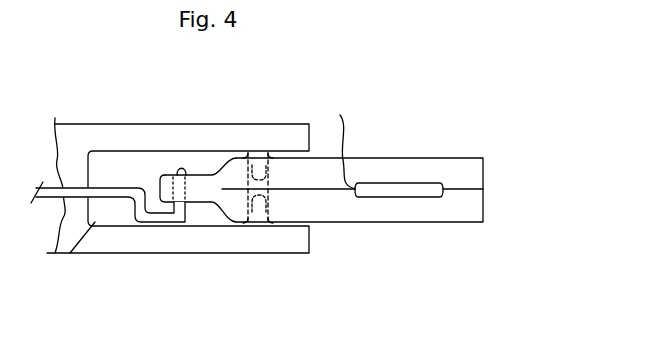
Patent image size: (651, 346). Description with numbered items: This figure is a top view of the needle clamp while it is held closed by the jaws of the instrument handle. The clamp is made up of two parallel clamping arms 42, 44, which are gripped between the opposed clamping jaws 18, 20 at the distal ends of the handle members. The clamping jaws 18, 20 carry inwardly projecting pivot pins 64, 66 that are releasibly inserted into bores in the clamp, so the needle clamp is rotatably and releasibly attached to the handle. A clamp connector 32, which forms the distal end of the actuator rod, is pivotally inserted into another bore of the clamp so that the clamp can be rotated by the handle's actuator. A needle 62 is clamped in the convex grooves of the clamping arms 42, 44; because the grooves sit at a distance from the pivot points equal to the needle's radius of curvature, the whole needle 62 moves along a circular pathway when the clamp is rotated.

The clamping jaw 18 is at (126, 138).
The clamping jaw 20 is at (152, 245).
The clamp connector 32 is at (135, 219).
The clamping arm 42 is at (430, 216).
The clamping arm 44 is at (425, 172).
The needle 62 is at (393, 187).
The pivot pin 64 is at (257, 150).
The pivot pin 66 is at (263, 222).